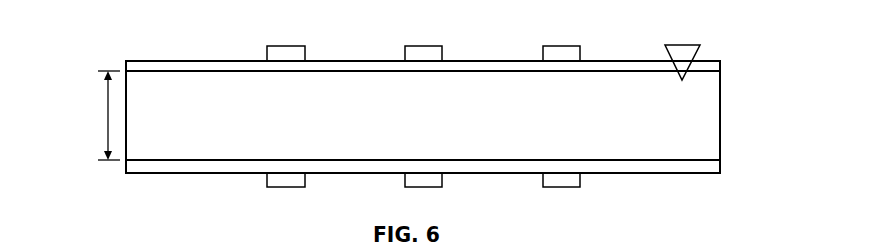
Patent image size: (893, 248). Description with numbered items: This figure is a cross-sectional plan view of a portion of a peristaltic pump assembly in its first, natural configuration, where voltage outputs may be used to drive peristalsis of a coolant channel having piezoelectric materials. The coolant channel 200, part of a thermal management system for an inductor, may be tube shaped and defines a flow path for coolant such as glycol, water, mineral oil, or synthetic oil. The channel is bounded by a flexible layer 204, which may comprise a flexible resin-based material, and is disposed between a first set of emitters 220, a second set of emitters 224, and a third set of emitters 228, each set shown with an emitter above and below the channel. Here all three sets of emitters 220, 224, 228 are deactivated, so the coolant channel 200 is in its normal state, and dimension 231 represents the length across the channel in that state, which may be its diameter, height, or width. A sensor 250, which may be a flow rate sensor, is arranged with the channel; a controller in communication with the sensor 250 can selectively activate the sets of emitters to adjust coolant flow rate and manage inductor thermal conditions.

The coolant channel 200 is at (134, 34).
The flexible layer 204 is at (163, 61).
The first set of emitters 220 is at (287, 46).
The second set of emitters 224 is at (423, 46).
The third set of emitters 228 is at (562, 46).
The sensor 250 is at (697, 52).
The dimension 231 is at (107, 123).